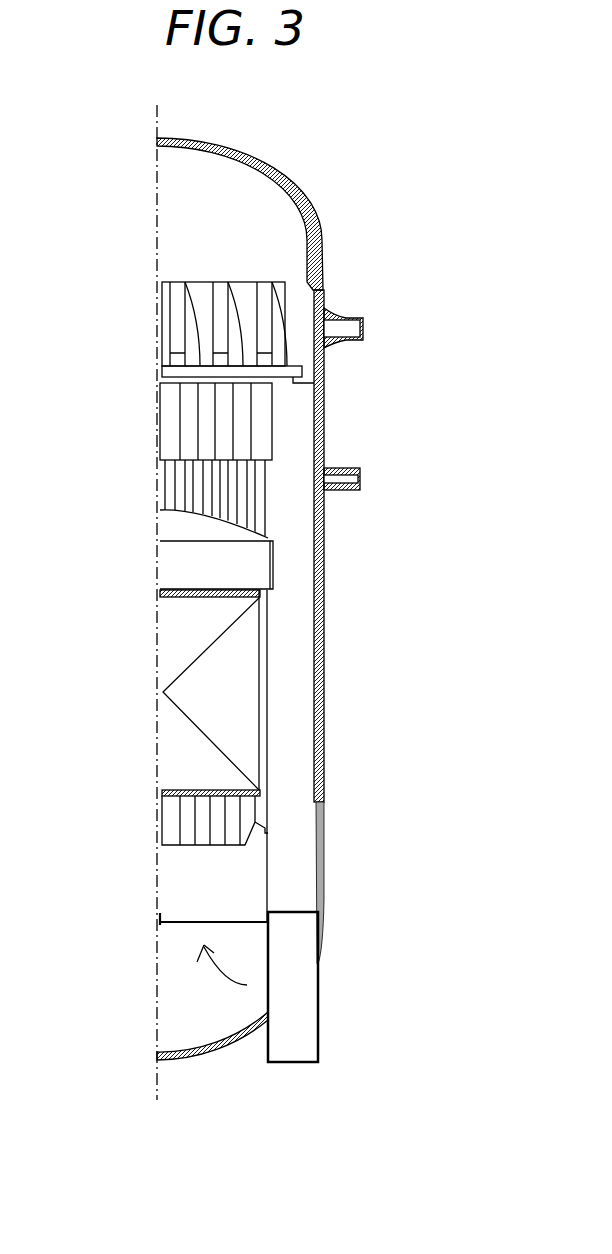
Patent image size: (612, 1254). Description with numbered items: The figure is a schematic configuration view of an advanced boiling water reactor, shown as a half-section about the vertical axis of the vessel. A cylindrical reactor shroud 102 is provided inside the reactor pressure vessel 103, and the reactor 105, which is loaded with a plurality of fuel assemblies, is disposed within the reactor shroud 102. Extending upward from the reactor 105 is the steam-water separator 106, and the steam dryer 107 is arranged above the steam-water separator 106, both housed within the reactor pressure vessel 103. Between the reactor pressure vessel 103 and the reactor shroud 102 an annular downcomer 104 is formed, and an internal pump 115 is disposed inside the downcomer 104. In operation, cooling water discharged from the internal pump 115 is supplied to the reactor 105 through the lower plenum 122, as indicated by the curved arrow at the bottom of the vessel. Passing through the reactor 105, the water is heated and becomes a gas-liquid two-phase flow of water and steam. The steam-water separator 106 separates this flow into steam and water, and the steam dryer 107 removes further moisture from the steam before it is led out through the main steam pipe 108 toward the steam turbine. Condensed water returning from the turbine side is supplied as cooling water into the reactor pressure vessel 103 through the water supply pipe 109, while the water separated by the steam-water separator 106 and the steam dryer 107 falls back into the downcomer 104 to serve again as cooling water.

The reactor shroud 102 is at (268, 680).
The reactor pressure vessel 103 is at (323, 548).
The downcomer 104 is at (295, 763).
The reactor 105 is at (167, 730).
The steam-water separator 106 is at (170, 438).
The steam dryer 107 is at (170, 323).
The main steam pipe 108 is at (352, 320).
The water supply pipe 109 is at (358, 470).
The internal pump 115 is at (295, 935).
The lower plenum 122 is at (203, 1017).